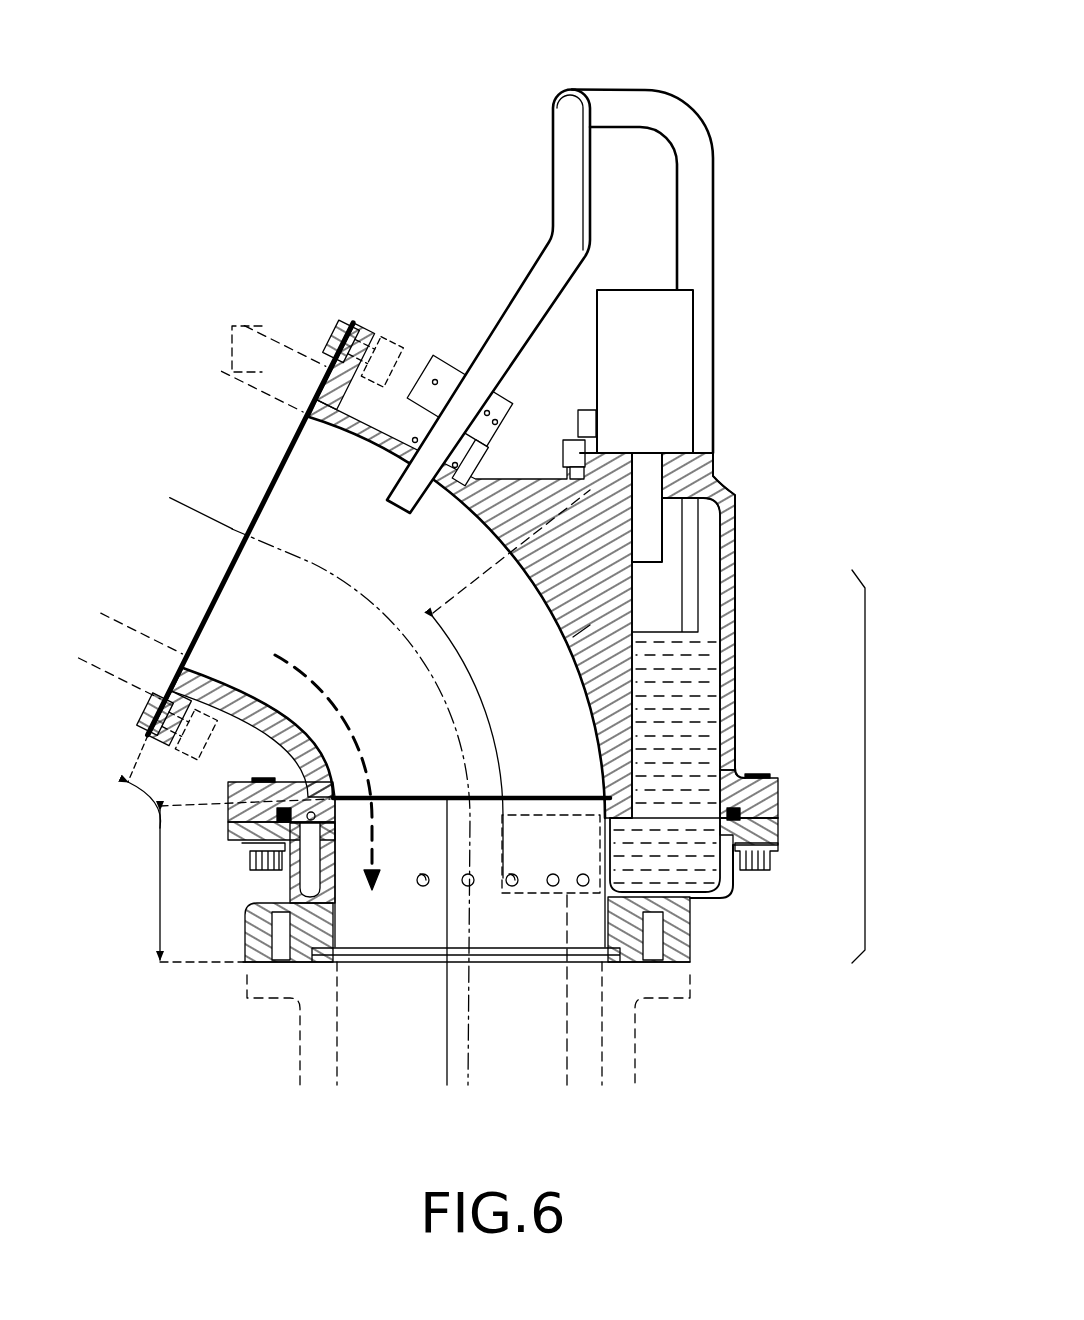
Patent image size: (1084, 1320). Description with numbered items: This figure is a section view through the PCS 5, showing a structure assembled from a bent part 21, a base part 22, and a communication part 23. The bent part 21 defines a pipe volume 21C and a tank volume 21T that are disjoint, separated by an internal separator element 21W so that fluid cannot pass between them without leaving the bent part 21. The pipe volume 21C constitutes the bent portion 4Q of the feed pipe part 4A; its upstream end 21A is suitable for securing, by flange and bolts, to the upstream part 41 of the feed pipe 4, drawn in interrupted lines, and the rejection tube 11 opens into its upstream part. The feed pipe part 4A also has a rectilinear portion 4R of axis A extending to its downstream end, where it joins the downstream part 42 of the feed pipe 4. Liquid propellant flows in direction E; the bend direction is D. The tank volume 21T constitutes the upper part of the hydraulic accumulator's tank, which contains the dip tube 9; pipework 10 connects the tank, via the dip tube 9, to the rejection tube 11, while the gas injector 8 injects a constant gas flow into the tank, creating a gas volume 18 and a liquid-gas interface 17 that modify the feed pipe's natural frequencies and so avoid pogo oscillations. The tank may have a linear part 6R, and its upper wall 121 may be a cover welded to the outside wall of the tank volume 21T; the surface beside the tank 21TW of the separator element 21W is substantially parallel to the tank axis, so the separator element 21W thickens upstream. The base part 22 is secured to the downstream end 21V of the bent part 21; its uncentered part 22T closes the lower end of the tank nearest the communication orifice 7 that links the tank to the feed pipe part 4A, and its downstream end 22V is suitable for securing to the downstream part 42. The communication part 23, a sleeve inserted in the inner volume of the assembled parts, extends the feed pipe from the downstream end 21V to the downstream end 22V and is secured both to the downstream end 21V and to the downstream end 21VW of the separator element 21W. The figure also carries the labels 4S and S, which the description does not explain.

The PCS 5 is at (860, 62).
The pipework 10 is at (713, 185).
The gas injector 8 is at (655, 381).
The upper wall of the tank volume 121 is at (697, 455).
The dip tube 9 is at (698, 540).
The surface beside the tank of the separator element 21TW is at (707, 565).
The tank volume 21T is at (665, 606).
The liquid-gas interface 17 is at (710, 630).
The downstream end of the separator element 21VW is at (628, 800).
The downstream end of the bent part 21V is at (228, 810).
The uncentered part of the base part 22T is at (727, 893).
The base part 22 is at (705, 945).
The downstream end of the base part 22V is at (262, 965).
The linear part of the tank 6R is at (866, 763).
The downstream part of the feed pipe 42 is at (300, 1076).
The upstream part of the feed pipe 41 is at (247, 365).
The rectilinear portion 4R is at (160, 893).
The non-rectilinear portion 4Q is at (140, 795).
The inlet flange 4 is at (370, 420).
The feed pipe part 4A is at (272, 670).
The inner surface 4S is at (490, 742).
The upstream end of the pipe volume 21A is at (330, 330).
The bent part 21 is at (513, 478).
The pipe volume 21C is at (294, 505).
The internal separator element 21W is at (565, 577).
The gas volume 18 is at (573, 637).
The rejection tube 11 is at (396, 494).
The communication part 23 is at (423, 794).
The communication orifice 7 is at (508, 854).
The plane S is at (178, 505).
The bend direction D is at (395, 142).
The flow direction E is at (337, 774).
The axis A is at (447, 935).